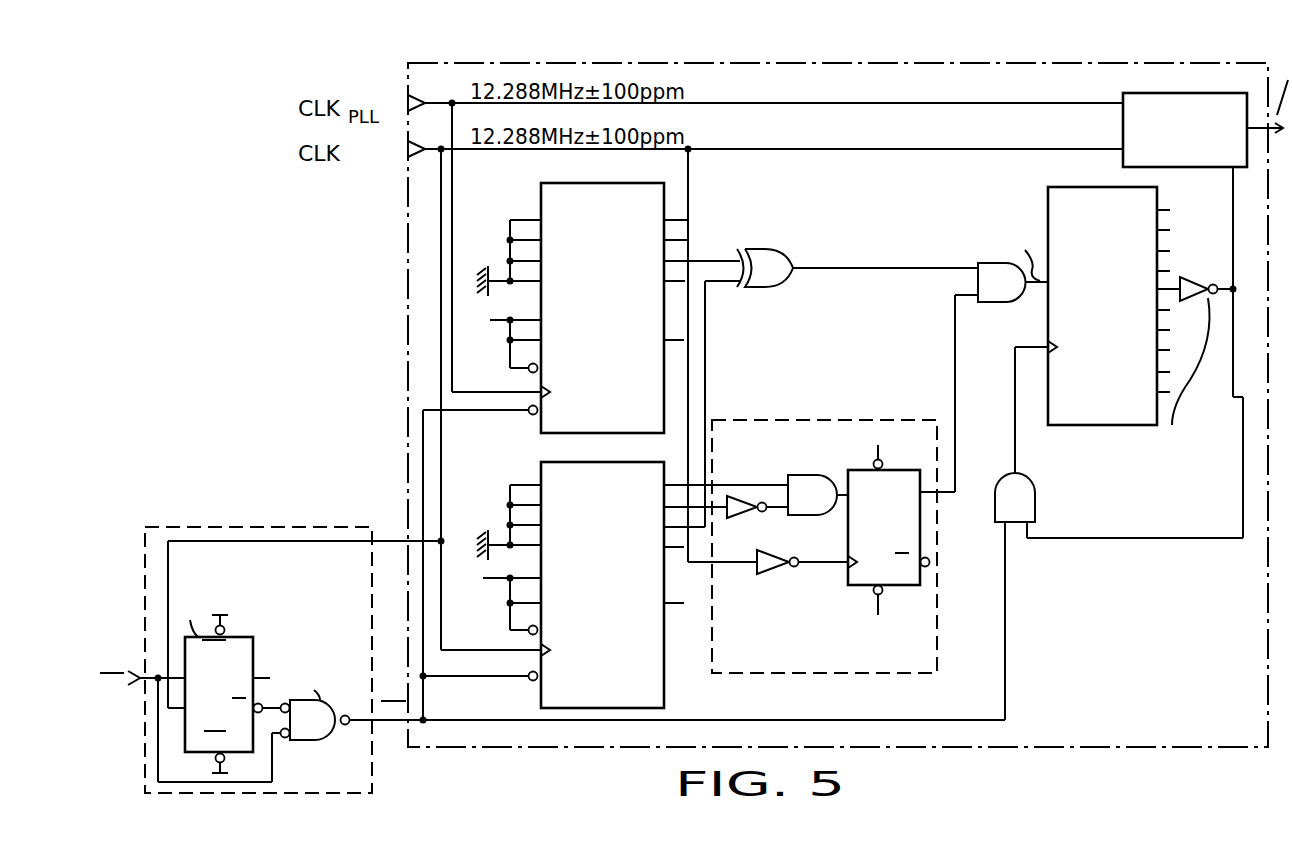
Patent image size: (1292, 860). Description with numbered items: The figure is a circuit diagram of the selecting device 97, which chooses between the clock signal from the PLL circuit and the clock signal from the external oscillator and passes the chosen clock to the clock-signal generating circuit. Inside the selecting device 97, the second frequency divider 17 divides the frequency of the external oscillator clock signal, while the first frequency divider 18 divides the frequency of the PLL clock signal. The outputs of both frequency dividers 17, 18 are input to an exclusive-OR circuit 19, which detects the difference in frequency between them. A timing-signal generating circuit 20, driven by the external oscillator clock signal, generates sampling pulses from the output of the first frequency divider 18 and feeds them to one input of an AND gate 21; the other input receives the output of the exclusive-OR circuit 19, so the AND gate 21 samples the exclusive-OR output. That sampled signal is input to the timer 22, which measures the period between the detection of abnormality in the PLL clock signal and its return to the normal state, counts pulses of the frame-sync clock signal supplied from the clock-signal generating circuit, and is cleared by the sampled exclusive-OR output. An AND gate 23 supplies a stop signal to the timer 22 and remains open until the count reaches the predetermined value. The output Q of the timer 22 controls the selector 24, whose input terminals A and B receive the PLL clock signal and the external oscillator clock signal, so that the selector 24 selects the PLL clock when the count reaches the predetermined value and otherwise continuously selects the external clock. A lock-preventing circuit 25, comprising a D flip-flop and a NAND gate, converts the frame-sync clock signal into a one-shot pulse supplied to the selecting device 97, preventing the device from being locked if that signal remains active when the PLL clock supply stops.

The second frequency divider 17 is at (683, 195).
The first frequency divider 18 is at (664, 655).
The exclusive-OR circuit 19 is at (745, 250).
The timing-signal generating circuit 20 is at (937, 655).
The AND gate 21 is at (978, 276).
The timer 22 is at (1085, 427).
The AND gate 23 is at (1030, 478).
The selector 24 is at (1236, 170).
The lock-preventing circuit 25 is at (183, 522).
The selecting device 97 is at (1217, 794).